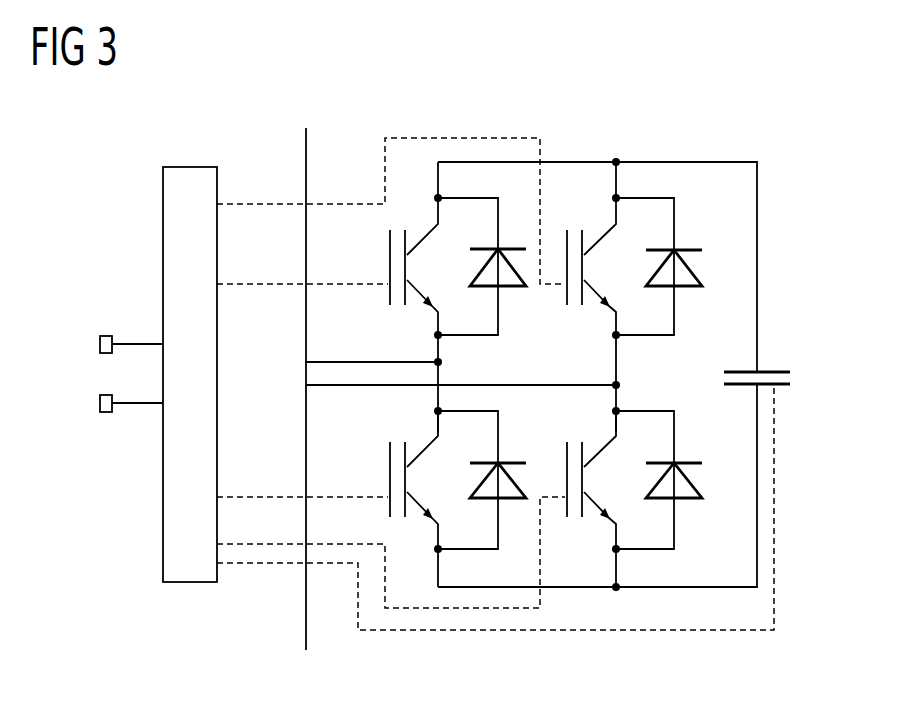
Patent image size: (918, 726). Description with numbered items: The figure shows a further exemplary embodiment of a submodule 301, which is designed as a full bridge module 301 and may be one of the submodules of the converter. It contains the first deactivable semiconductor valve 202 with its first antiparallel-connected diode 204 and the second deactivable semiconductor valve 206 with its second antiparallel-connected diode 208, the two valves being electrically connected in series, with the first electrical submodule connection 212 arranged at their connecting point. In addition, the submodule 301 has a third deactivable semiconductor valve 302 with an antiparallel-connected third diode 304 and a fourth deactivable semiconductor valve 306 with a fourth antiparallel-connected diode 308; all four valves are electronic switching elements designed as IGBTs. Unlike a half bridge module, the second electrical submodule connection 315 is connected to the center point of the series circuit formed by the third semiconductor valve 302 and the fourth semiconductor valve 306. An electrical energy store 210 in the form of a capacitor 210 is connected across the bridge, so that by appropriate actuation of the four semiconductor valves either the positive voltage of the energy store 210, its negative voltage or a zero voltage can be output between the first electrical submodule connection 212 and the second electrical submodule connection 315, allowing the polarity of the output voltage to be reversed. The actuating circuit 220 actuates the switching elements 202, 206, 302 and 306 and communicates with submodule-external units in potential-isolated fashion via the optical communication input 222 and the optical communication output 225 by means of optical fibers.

The submodule 301 is at (809, 142).
The actuating circuit 220 is at (188, 167).
The first electrical submodule connection 212 is at (306, 147).
The second electrical submodule connection 315 is at (306, 638).
The optical communication input 222 is at (100, 344).
The optical communication output 225 is at (100, 403).
The first deactivable semiconductor valve 202 is at (388, 259).
The first antiparallel-connected diode 204 is at (470, 265).
The second deactivable semiconductor valve 206 is at (388, 471).
The second antiparallel-connected diode 208 is at (470, 478).
The third deactivable semiconductor valve 302 is at (585, 265).
The third diode 304 is at (700, 269).
The fourth deactivable semiconductor valve 306 is at (585, 479).
The fourth antiparallel-connected diode 308 is at (700, 483).
The energy store 210 is at (778, 371).